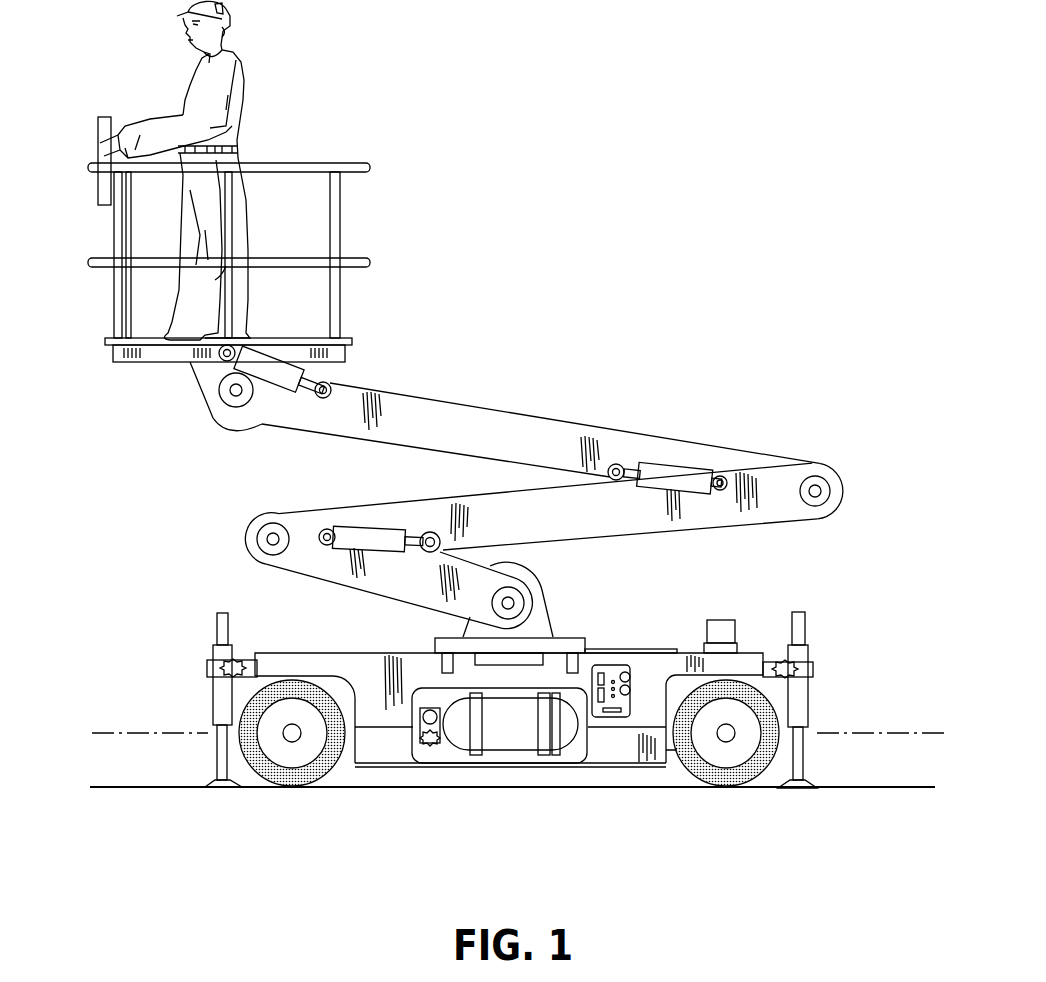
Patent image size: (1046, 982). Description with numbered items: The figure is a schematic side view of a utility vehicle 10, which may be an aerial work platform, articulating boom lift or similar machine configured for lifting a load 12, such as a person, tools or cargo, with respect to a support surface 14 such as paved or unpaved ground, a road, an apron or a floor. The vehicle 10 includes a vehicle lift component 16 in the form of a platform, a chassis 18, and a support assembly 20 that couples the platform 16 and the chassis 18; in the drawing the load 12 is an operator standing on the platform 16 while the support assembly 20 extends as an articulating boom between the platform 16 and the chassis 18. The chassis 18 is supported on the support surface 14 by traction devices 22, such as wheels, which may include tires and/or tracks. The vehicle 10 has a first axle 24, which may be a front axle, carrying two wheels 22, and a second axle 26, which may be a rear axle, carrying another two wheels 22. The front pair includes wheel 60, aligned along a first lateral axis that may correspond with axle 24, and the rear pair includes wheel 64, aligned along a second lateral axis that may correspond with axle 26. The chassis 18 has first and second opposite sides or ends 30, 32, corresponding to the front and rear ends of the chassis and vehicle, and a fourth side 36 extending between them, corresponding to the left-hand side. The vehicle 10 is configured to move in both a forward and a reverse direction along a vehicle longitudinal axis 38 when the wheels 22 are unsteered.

The utility vehicle 10 is at (695, 160).
The load 12 is at (243, 92).
The support surface 14 is at (162, 786).
The vehicle lift component 16 is at (100, 343).
The chassis 18 is at (648, 635).
The support assembly 20 is at (535, 411).
The traction devices 22 is at (522, 772).
The first axle 24 is at (295, 733).
The second axle 26 is at (723, 733).
The first side 30 is at (197, 715).
The second side 32 is at (831, 711).
The fourth side 36 is at (383, 745).
The vehicle longitudinal axis 38 is at (898, 735).
The wheel 60 is at (292, 787).
The wheel 64 is at (726, 787).